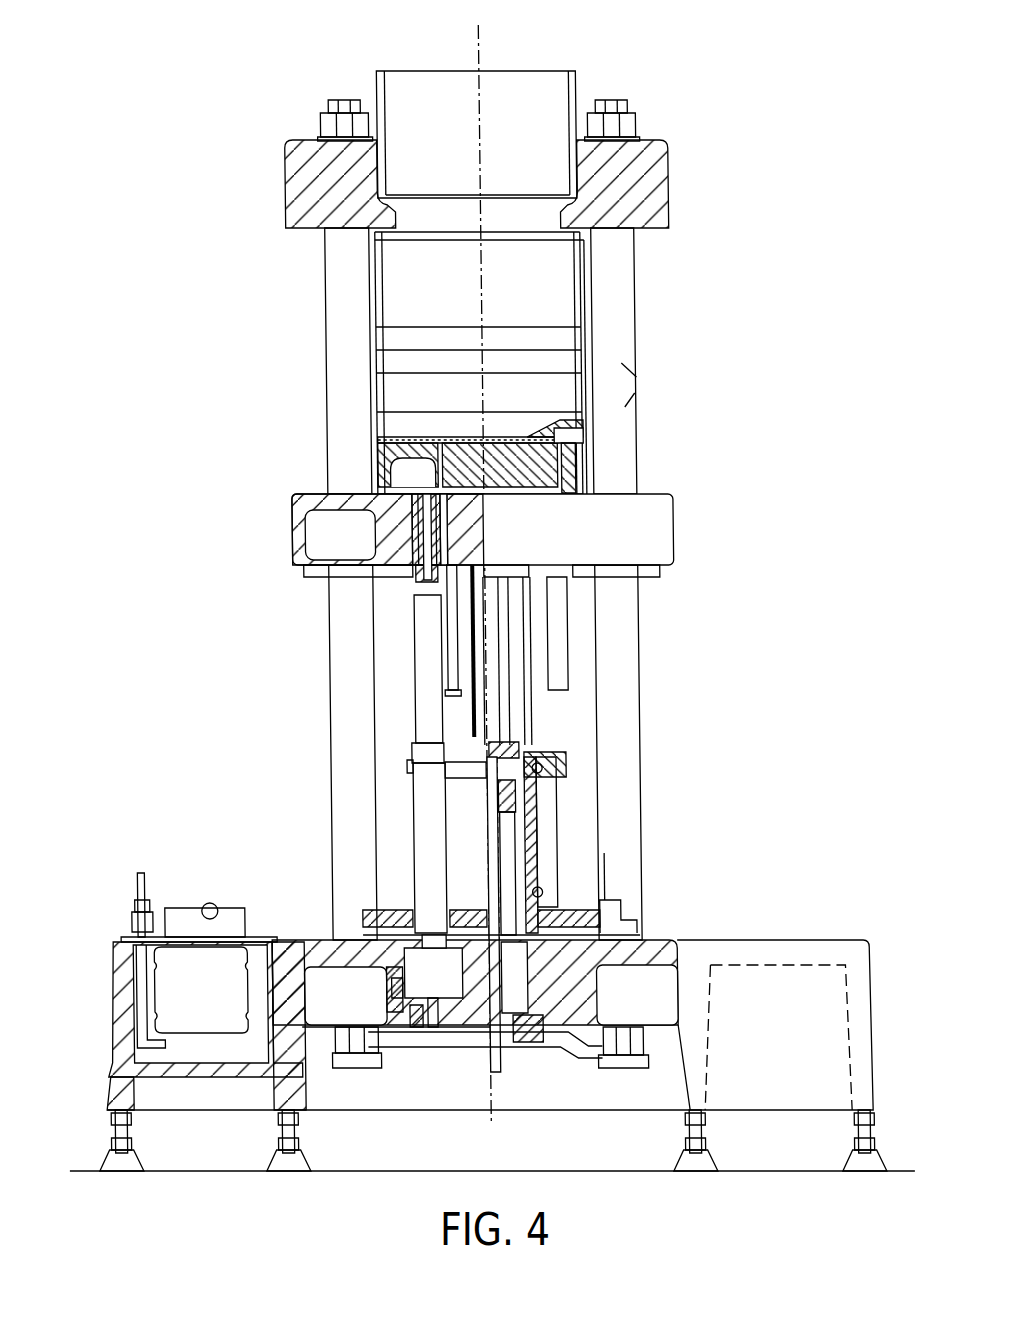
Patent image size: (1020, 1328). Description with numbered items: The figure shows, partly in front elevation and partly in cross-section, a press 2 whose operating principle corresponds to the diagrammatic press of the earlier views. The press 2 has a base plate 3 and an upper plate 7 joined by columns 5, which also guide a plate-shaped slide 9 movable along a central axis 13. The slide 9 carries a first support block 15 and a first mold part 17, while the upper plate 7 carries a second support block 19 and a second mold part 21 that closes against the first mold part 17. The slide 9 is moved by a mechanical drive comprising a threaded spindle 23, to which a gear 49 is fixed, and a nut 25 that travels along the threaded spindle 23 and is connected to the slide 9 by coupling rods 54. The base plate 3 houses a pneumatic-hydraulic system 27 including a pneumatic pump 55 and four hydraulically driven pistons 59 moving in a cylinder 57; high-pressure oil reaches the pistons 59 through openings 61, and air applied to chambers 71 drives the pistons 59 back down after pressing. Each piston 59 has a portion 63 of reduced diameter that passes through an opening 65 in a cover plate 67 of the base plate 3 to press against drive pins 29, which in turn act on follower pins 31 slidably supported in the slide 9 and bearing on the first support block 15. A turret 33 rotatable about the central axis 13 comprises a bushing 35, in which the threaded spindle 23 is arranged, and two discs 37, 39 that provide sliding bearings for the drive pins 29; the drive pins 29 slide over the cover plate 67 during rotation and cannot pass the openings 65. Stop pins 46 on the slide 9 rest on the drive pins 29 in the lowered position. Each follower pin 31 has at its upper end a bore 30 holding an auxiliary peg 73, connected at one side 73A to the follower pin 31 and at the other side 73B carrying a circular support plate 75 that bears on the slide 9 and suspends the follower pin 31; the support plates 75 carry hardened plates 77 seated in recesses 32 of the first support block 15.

The press 2 is at (519, 105).
The base plate 3 is at (498, 1016).
The columns 5 is at (625, 265).
The upper plate 7 is at (667, 176).
The slide 9 is at (502, 556).
The central axis 13 is at (476, 107).
The first support block 15 is at (533, 400).
The first mold part 17 is at (575, 366).
The second support block 19 is at (573, 310).
The second mold part 21 is at (575, 343).
The threaded spindle 23 is at (480, 847).
The nut 25 is at (530, 810).
The pneumatic-hydraulic system 27 is at (458, 1040).
The drive pins 29 is at (417, 858).
The bore 30 is at (446, 540).
The follower pins 31 is at (420, 644).
The recesses 32 is at (433, 440).
The turret 33 is at (594, 794).
The bushing 35 is at (533, 828).
The disc 37 is at (354, 905).
The disc 39 is at (559, 756).
The stop pins 46 is at (445, 667).
The gear 49 is at (421, 1027).
The coupling rods 54 is at (458, 703).
The pneumatic pump 55 is at (180, 956).
The cylinder 57 is at (405, 1020).
The hydraulically driven pistons 59 is at (388, 958).
The openings 61 is at (470, 1040).
The portion of reduced diameter 63 is at (424, 914).
The opening 65 is at (354, 917).
The cover plate 67 is at (607, 924).
The chambers 71 is at (400, 972).
The auxiliary peg 73 is at (373, 541).
The side 73A is at (413, 582).
The side 73B is at (442, 522).
The circular support plate 75 is at (365, 473).
The hardened plates 77 is at (379, 458).